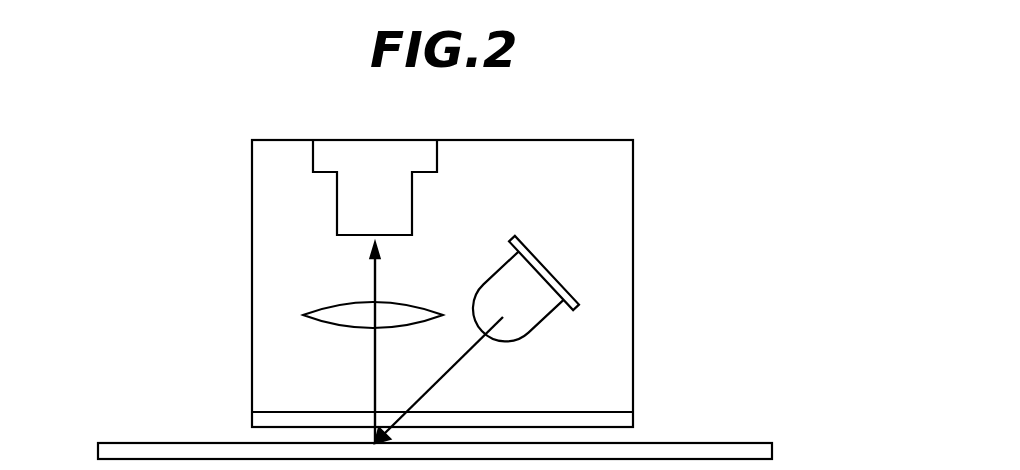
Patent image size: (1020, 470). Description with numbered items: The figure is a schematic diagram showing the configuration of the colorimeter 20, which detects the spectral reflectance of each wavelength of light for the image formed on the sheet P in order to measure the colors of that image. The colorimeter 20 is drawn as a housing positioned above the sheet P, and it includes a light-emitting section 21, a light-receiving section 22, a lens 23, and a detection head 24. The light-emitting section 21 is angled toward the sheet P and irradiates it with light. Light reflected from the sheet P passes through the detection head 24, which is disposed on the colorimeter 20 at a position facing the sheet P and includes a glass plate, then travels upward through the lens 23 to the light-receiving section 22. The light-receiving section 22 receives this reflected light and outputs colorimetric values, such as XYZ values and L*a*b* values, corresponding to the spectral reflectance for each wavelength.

The colorimeter 20 is at (539, 140).
The light-emitting section 21 is at (535, 288).
The light-receiving section 22 is at (334, 222).
The lens 23 is at (322, 308).
The detection head 24 is at (590, 412).
The sheet P is at (710, 443).